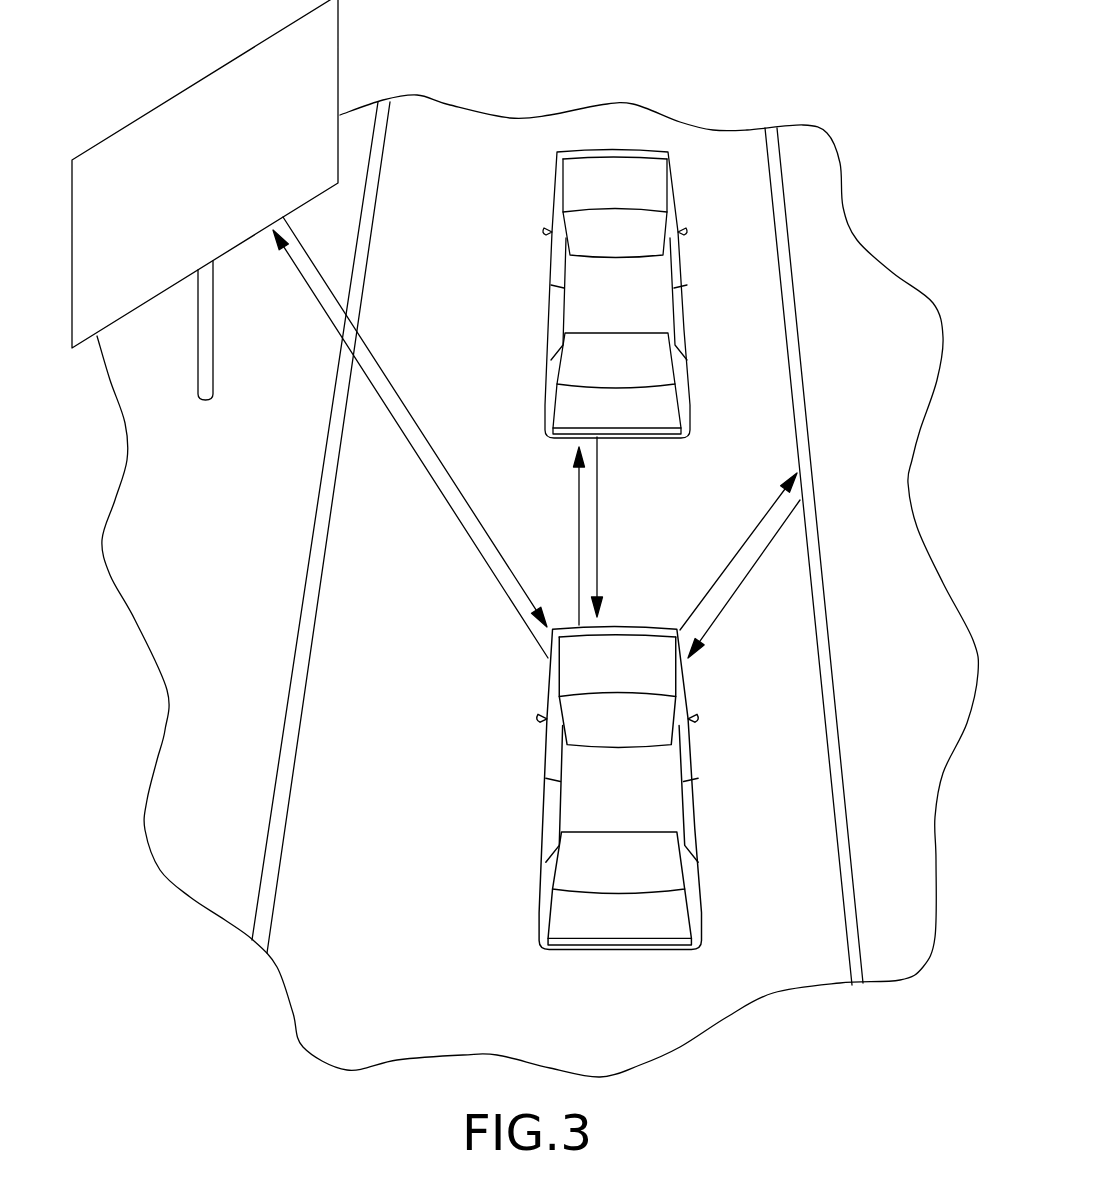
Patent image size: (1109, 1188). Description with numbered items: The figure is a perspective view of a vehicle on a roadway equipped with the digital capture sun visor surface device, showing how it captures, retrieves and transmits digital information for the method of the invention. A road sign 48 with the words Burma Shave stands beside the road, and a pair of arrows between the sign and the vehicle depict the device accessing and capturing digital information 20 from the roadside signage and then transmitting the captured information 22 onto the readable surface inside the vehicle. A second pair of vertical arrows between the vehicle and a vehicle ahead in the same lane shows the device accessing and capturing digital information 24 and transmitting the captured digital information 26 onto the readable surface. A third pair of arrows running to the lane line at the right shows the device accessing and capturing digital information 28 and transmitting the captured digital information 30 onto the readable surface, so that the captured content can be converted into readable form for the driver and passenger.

The road sign 48 is at (338, 60).
The digital capture sun visor device accessing and capturing digital information fro 20 is at (443, 502).
The digital capture sun visor device transmitting captured digital information onto 22 is at (410, 415).
The digital capture sun visor device accessing and capturing digital information 24 is at (579, 545).
The digital capture sun visor device transmitting captured digital information onto 26 is at (598, 518).
The digital capture sun visor device accessing and capturing digital information 28 is at (733, 560).
The digital capture sun visor device transmitting captured digital information onto 30 is at (752, 568).